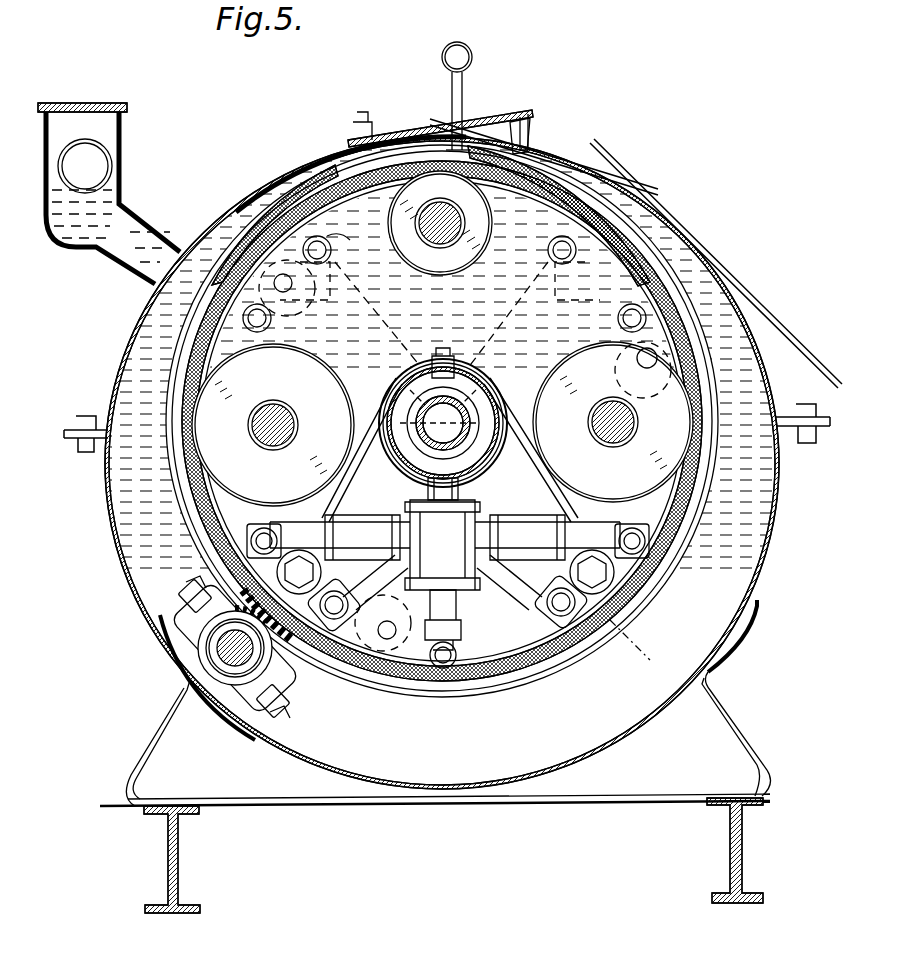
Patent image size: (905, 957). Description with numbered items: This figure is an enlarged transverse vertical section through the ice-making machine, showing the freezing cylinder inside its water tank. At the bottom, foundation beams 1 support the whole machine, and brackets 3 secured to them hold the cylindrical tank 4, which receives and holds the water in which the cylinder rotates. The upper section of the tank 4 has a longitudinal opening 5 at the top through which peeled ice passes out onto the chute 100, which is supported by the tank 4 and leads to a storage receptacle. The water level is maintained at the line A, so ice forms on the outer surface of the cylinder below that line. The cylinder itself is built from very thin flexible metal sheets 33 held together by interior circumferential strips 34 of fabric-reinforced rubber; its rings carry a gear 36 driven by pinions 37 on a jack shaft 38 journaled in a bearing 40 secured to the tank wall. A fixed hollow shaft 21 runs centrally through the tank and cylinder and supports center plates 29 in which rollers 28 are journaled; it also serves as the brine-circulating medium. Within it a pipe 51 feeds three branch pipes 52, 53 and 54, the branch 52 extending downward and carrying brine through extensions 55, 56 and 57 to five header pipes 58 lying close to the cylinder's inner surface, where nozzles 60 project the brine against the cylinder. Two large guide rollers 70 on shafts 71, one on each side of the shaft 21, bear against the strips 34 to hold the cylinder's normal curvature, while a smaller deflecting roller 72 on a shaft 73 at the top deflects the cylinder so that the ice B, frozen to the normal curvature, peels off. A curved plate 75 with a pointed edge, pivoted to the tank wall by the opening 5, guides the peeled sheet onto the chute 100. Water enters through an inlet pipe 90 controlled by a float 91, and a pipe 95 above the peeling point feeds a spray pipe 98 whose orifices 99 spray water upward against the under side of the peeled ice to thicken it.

The foundation beams 1 is at (180, 862).
The brackets 3 is at (158, 715).
The cylindrical tank 4 is at (252, 197).
The longitudinal openings 5 is at (422, 132).
The water level line A is at (345, 160).
The ice B is at (600, 165).
The hollow shaft 21 is at (418, 442).
The rollers 28 is at (312, 285).
The center plates 29 is at (548, 665).
The sheets 33 is at (197, 455).
The interior circumferential strips 34 is at (185, 440).
The gear 36 is at (215, 572).
The pinions 37 is at (225, 685).
The jack shaft 38 is at (215, 645).
The bearing 40 is at (250, 695).
The pipe 51 is at (400, 517).
The branch pipe 52 is at (470, 486).
The branch pipe 53 is at (520, 312).
The branch pipe 54 is at (410, 330).
The extension 55 is at (510, 520).
The extension 56 is at (420, 518).
The extension 57 is at (428, 572).
The header pipes 58 is at (332, 252).
The nozzles 60 is at (334, 248).
The guide rollers 70 is at (290, 490).
The shafts 71 is at (293, 425).
The deflecting roller 72 is at (468, 240).
The shafts 73 is at (462, 223).
The curved plate 75 is at (522, 145).
The inlet pipe 90 is at (148, 232).
The float 91 is at (112, 165).
The pipe 95 is at (473, 55).
The spray pipe 98 is at (463, 92).
The orifices 99 is at (458, 140).
The chute 100 is at (692, 230).